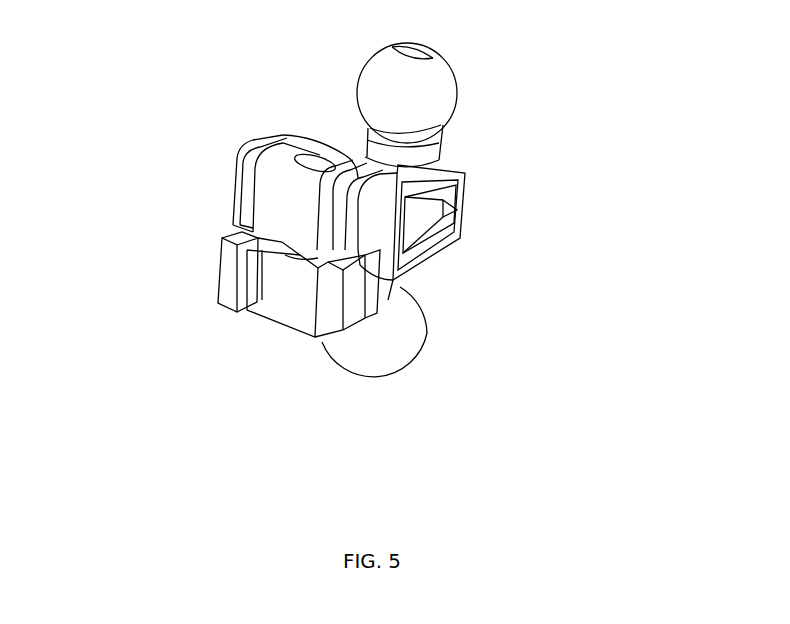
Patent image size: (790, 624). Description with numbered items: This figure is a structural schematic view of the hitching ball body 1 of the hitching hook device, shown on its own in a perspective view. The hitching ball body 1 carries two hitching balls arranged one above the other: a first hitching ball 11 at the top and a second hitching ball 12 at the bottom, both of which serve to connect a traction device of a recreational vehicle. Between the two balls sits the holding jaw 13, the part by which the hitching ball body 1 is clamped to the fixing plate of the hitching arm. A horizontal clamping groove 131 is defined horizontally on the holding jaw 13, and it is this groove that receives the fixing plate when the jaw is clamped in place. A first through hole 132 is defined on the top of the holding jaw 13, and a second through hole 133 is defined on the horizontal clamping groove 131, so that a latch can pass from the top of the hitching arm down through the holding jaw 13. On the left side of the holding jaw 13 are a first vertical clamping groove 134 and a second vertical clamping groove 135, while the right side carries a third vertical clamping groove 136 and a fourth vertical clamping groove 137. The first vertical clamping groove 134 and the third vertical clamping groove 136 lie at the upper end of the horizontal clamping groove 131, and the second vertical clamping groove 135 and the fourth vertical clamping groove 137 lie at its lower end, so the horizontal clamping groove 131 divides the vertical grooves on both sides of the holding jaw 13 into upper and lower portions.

The hitching ball body 1 is at (463, 193).
The first hitching ball 11 is at (437, 88).
The second hitching ball 12 is at (418, 348).
The holding jaw 13 is at (283, 183).
The horizontal clamping groove 131 is at (272, 253).
The first through hole 132 is at (303, 147).
The second through hole 133 is at (293, 260).
The first vertical clamping groove 134 is at (252, 203).
The second vertical clamping groove 135 is at (247, 287).
The third vertical clamping groove 136 is at (415, 168).
The fourth vertical clamping groove 137 is at (317, 302).